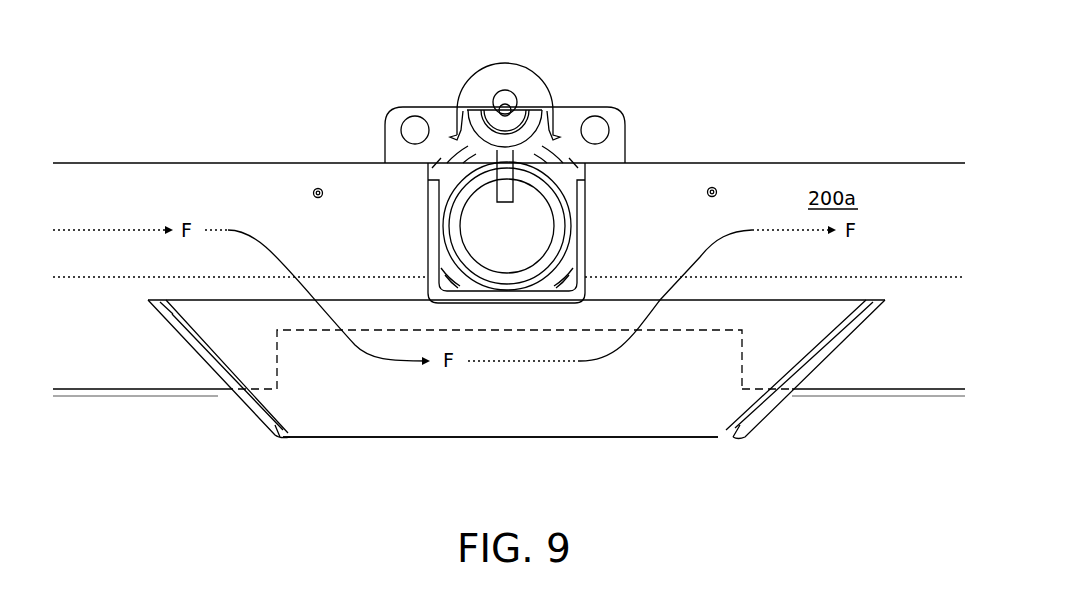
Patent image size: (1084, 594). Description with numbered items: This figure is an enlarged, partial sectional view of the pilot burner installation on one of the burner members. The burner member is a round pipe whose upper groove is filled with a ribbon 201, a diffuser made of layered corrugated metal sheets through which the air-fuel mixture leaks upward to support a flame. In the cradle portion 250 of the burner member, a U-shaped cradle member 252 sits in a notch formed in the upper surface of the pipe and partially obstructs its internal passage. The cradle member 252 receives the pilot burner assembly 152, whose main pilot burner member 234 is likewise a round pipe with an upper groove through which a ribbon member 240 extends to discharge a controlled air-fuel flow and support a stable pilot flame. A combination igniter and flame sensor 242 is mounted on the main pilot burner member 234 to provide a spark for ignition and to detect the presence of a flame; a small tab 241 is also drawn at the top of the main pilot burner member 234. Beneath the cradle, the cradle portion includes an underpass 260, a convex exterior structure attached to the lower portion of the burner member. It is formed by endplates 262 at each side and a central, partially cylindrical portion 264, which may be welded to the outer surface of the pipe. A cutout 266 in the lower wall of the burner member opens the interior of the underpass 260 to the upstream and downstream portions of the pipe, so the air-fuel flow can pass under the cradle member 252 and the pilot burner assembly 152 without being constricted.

The pilot burner assembly 152 is at (388, 94).
The ribbon 201 is at (172, 162).
The main pilot burner member 234 is at (534, 256).
The ribbon member 240 is at (549, 236).
The tab 241 is at (513, 182).
The combination igniter and flame sensor 242 is at (542, 66).
The cradle portion 250 is at (383, 262).
The cradle member 252 is at (421, 229).
The underpass 260 is at (516, 421).
The endplates 262 is at (256, 426).
The central partially cylindrical portion 264 is at (625, 433).
The cutout 266 is at (344, 340).